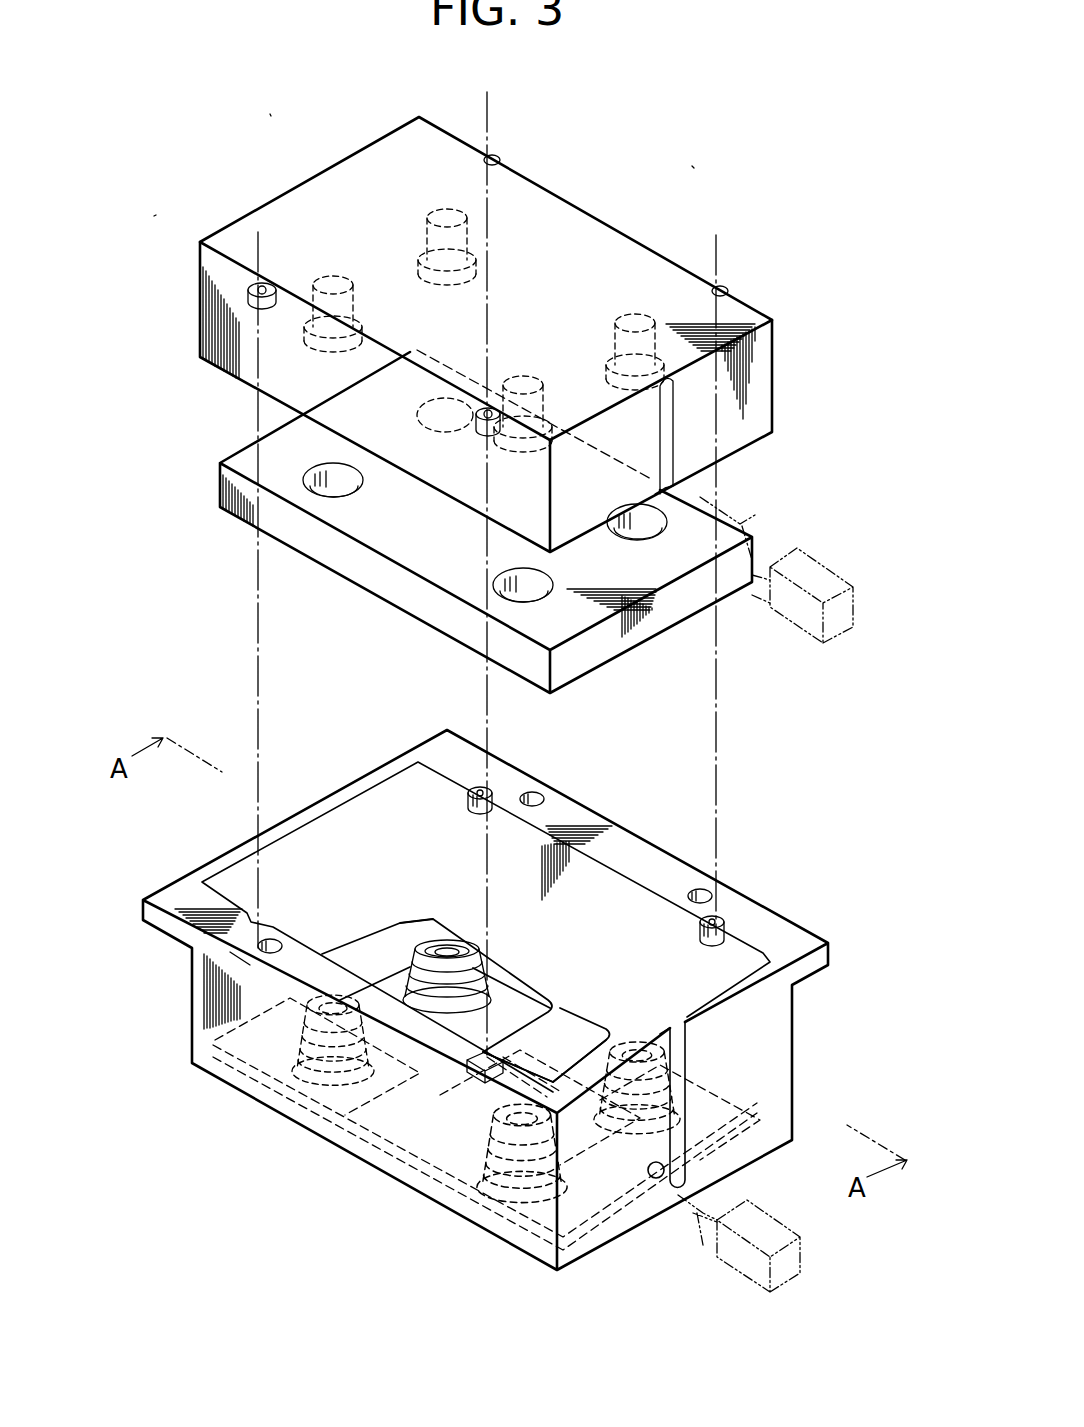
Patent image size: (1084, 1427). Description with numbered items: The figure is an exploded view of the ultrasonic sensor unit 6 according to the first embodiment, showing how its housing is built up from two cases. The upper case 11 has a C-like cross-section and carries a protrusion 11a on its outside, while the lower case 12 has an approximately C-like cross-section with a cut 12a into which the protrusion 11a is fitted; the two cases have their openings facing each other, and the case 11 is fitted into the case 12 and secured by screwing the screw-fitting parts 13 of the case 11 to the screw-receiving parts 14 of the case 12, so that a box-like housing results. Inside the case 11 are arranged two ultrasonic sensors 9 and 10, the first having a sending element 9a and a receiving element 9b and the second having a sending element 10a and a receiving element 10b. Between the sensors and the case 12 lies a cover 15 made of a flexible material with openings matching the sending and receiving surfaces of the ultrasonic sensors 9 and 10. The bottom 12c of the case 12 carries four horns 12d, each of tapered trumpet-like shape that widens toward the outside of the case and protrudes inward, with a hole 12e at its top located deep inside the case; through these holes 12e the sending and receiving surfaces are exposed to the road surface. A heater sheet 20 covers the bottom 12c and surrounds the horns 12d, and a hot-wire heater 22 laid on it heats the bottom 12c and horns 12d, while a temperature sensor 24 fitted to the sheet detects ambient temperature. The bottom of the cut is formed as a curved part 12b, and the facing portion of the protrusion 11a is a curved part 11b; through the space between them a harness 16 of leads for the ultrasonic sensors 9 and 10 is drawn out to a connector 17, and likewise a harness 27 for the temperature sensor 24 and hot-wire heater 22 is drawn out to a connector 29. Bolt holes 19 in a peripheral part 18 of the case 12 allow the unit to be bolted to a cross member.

The ultrasonic sensor unit 6 is at (156, 215).
The ultrasonic sensor 9 is at (310, 98).
The sending element 9a is at (447, 218).
The receiving element 9b is at (333, 283).
The ultrasonic sensor 10 is at (733, 210).
The sending element 10a is at (637, 322).
The receiving element 10b is at (523, 383).
The case 11 is at (532, 180).
The protrusion 11a is at (672, 412).
The curved part 11b is at (676, 492).
The case 12 is at (440, 1207).
The cut 12a is at (690, 1135).
The curved part 12b is at (688, 1182).
The bottom 12c is at (445, 942).
The horn 12d is at (400, 927).
The hole 12e is at (415, 912).
The screw-fitting part 13 is at (248, 290).
The screw-receiving part 14 is at (483, 798).
The cover 15 is at (360, 562).
The harness 16 is at (750, 520).
The connector 17 is at (820, 570).
The peripheral part 18 is at (183, 900).
The bolt hole 19 is at (533, 792).
The heater sheet 20 is at (577, 995).
The hot-wire heater 22 is at (538, 977).
The temperature sensor 24 is at (350, 1158).
The harness 27 is at (697, 1213).
The connector 29 is at (743, 1257).